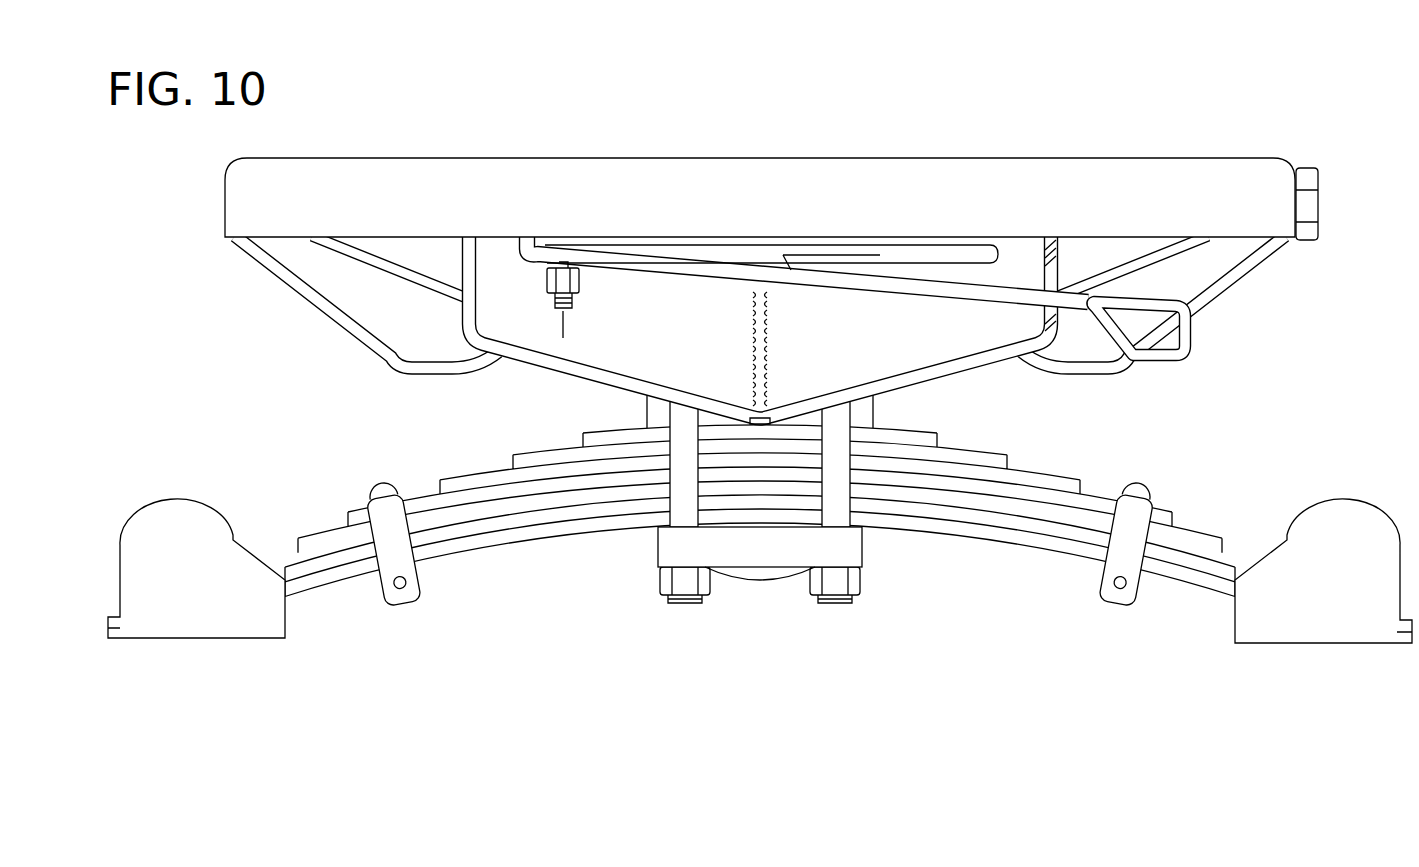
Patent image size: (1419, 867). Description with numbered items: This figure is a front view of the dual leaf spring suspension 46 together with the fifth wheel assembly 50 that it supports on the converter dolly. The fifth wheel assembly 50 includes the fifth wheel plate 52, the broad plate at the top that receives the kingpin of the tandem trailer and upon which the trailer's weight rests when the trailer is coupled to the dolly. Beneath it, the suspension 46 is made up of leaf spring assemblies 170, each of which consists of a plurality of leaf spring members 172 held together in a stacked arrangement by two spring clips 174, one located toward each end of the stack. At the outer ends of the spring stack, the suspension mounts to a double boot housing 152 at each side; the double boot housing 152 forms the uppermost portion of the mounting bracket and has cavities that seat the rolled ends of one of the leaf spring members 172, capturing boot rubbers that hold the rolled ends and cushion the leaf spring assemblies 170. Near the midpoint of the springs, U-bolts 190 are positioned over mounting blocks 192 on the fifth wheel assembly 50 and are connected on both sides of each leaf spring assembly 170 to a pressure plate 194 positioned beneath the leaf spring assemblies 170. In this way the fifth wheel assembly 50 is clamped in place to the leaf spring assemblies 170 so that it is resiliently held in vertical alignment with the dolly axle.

The dual leaf spring suspension 46 is at (343, 439).
The fifth wheel assembly 50 is at (1343, 270).
The fifth wheel plate 52 is at (972, 178).
The double boot housing 152 is at (186, 518).
The leaf spring assembly 170 is at (1072, 457).
The leaf spring members 172 is at (1038, 480).
The spring clips 174 is at (410, 590).
The U-bolts 190 is at (683, 495).
The mounting blocks 192 is at (657, 410).
The pressure plate 194 is at (762, 567).